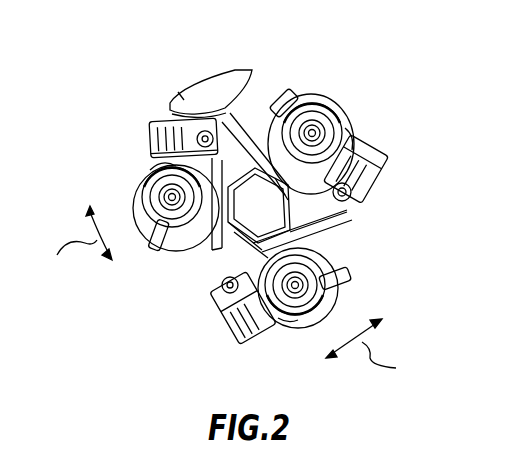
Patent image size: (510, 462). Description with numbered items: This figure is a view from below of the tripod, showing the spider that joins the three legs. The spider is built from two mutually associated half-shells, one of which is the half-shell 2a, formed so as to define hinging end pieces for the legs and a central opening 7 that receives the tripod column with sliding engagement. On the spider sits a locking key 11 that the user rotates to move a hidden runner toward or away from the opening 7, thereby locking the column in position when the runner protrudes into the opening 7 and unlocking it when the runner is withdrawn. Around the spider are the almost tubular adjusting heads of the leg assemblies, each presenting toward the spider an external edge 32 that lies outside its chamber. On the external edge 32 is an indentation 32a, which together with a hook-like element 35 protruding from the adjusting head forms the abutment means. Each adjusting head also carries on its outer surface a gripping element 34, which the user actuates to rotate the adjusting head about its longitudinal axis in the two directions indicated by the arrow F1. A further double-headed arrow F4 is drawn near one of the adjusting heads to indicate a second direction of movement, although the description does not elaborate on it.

The half-shell 2a is at (160, 138).
The opening 7 is at (262, 217).
The locking key 11 is at (196, 93).
The external edge 32 is at (337, 307).
The indentation 32a is at (383, 138).
The gripping element 34 is at (157, 250).
The hook-like element 35 is at (150, 170).
The arrow F1 is at (74, 240).
The force direction F4 is at (372, 355).